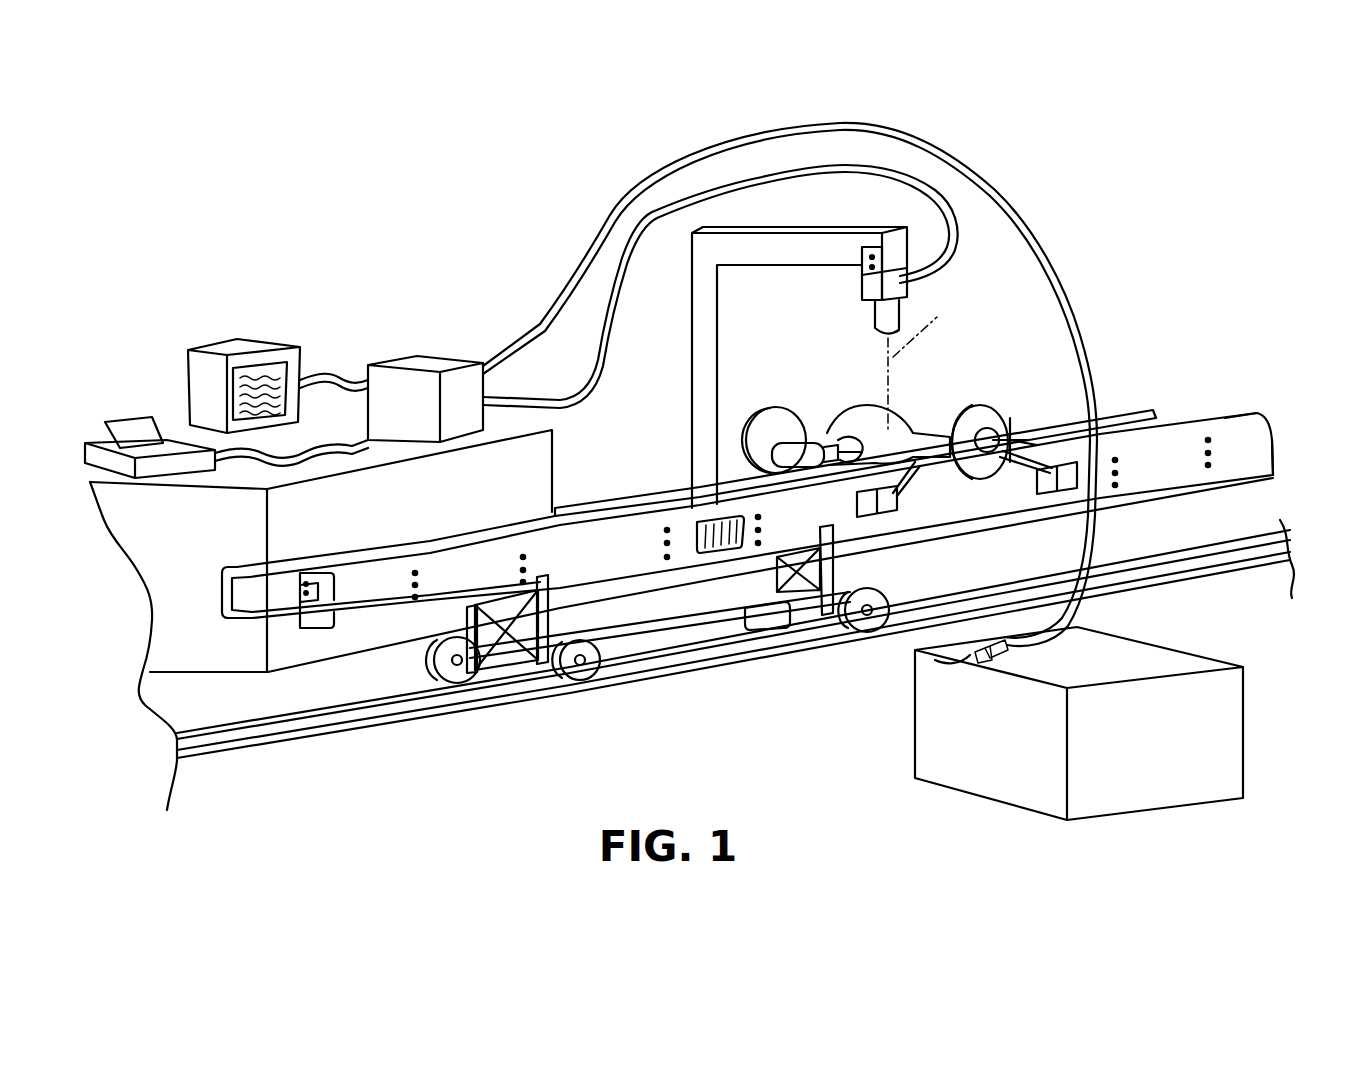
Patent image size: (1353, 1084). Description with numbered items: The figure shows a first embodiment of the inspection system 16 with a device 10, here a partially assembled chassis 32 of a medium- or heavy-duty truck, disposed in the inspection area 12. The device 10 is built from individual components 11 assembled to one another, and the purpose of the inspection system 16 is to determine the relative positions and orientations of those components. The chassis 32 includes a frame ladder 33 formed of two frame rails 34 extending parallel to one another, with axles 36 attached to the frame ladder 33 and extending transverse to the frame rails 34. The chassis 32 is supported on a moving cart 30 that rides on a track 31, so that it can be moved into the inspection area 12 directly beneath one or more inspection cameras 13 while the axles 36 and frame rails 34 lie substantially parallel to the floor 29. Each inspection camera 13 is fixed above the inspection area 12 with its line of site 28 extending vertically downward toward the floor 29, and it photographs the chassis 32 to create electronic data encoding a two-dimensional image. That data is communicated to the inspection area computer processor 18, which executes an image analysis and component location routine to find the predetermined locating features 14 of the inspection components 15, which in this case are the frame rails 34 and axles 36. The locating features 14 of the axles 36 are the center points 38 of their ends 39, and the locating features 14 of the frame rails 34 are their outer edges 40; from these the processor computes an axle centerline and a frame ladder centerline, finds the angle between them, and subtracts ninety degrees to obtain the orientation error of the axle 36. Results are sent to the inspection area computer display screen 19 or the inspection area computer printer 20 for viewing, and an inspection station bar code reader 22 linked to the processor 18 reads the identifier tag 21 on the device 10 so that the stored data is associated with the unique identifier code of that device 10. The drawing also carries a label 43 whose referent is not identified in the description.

The device 10 is at (1172, 440).
The individual components 11 is at (598, 512).
The inspection area 12 is at (1096, 228).
The inspection cameras 13 is at (900, 283).
The predetermined locating features 14 is at (665, 487).
The inspection components 15 is at (633, 490).
The inspection system 16 is at (240, 345).
The inspection area computer processor 18 is at (470, 395).
The inspection area computer display screen 19 is at (300, 350).
The inspection area computer printer 20 is at (92, 422).
The identifier tag 21 is at (725, 555).
The inspection station bar code reader 22 is at (1007, 650).
The line of site 28 is at (930, 318).
The floor 29 is at (513, 778).
The moving cart 30 is at (432, 662).
The track 31 is at (465, 690).
The chassis 32 is at (1253, 427).
The frame ladder 33 is at (1263, 427).
The frame rails 34 is at (1120, 420).
The axles 36 is at (866, 410).
The center points 38 is at (1027, 433).
The ends 39 is at (1012, 420).
The outer edges 40 is at (683, 487).
The grille 43 is at (703, 555).